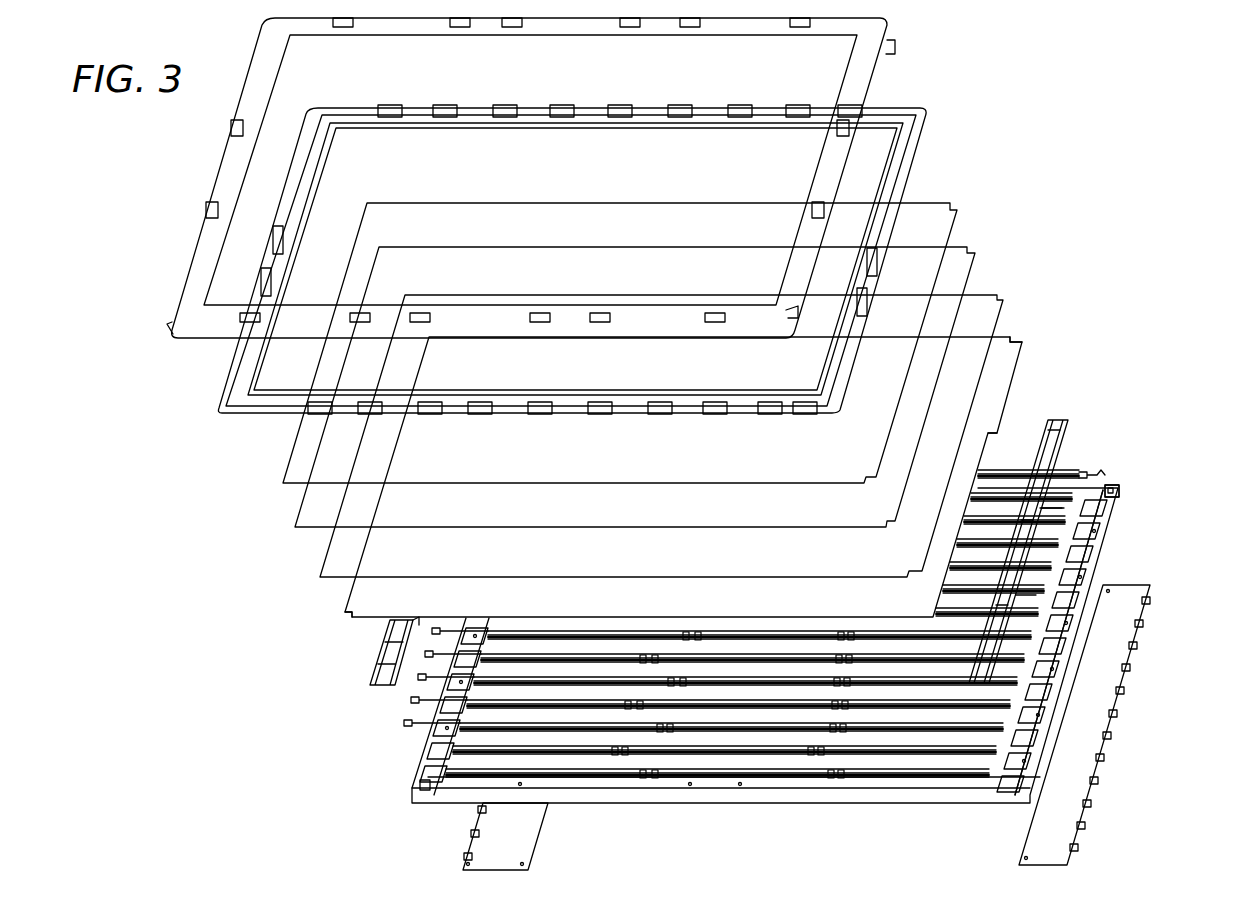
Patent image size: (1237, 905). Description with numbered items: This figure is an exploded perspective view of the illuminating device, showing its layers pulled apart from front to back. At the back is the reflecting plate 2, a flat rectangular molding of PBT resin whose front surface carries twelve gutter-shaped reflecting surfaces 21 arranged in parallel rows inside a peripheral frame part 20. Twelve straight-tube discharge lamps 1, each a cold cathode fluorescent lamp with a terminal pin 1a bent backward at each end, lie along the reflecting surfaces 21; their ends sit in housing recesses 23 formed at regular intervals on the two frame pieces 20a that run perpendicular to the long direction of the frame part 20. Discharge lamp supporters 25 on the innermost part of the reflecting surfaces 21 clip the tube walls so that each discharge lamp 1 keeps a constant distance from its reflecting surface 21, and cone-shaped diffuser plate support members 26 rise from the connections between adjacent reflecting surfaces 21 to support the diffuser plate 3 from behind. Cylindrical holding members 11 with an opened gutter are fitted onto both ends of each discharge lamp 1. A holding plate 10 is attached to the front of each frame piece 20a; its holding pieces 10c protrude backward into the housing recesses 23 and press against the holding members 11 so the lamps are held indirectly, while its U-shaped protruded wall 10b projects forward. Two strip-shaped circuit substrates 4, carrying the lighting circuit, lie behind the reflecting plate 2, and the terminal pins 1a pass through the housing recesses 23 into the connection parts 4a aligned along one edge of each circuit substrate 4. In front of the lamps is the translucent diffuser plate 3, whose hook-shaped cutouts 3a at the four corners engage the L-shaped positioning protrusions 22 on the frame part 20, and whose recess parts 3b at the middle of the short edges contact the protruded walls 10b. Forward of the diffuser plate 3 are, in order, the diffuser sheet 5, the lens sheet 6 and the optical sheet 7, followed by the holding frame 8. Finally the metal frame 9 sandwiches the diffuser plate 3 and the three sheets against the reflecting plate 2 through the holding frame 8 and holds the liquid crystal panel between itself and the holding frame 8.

The discharge lamp 1 is at (791, 596).
The terminal pin 1a is at (1088, 475).
The reflecting plate 2 is at (1130, 498).
The diffuser plate 3 is at (698, 468).
The cutout 3a is at (1022, 341).
The recess part 3b is at (988, 448).
The circuit substrate 4 is at (811, 727).
The connection part 4a is at (1137, 645).
The diffuser sheet 5 is at (985, 296).
The lens sheet 6 is at (967, 249).
The optical sheet 7 is at (940, 204).
The holding frame 8 is at (930, 124).
The metal frame 9 is at (858, 65).
The holding plate 10 is at (718, 519).
The protruded wall 10b is at (1063, 452).
The holding piece 10c is at (414, 628).
The holding member 11 is at (410, 700).
The frame part 20 is at (805, 795).
The frame piece 20a is at (1110, 560).
The reflecting surface 21 is at (1068, 505).
The positioning protrusion 22 is at (1112, 497).
The housing recess 23 is at (1058, 682).
The discharge lamp supporter 25 is at (645, 773).
The diffuser plate support member 26 is at (555, 731).